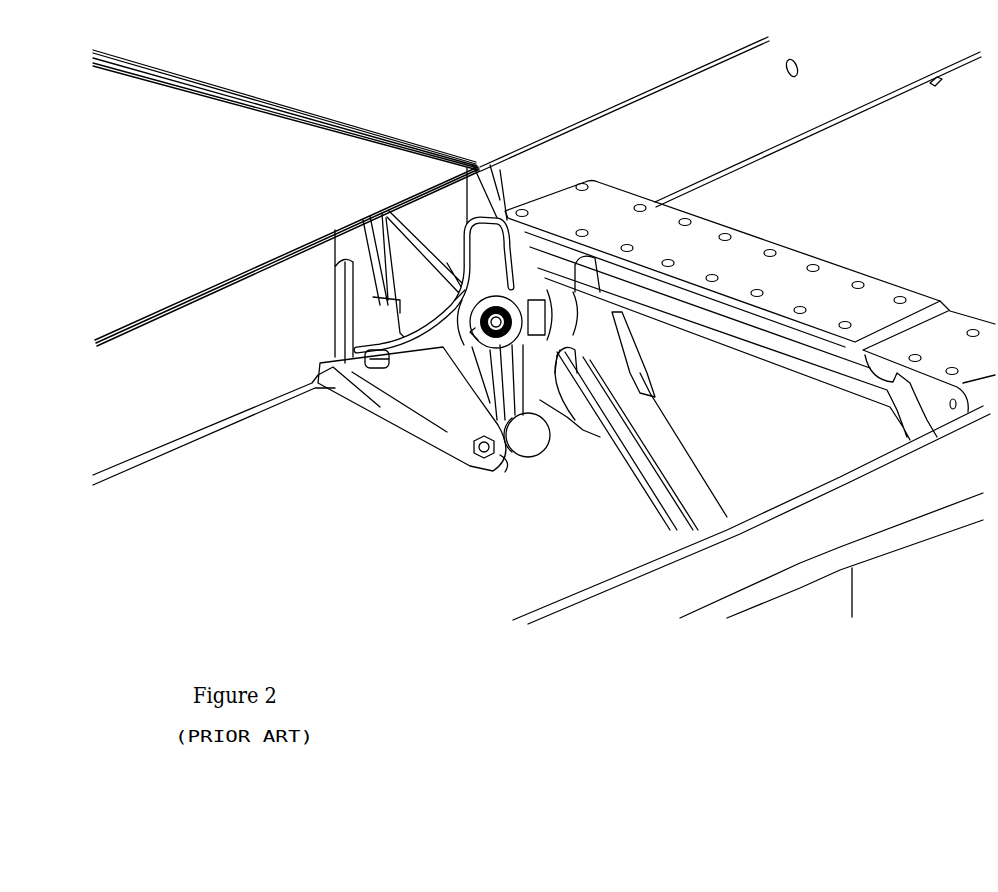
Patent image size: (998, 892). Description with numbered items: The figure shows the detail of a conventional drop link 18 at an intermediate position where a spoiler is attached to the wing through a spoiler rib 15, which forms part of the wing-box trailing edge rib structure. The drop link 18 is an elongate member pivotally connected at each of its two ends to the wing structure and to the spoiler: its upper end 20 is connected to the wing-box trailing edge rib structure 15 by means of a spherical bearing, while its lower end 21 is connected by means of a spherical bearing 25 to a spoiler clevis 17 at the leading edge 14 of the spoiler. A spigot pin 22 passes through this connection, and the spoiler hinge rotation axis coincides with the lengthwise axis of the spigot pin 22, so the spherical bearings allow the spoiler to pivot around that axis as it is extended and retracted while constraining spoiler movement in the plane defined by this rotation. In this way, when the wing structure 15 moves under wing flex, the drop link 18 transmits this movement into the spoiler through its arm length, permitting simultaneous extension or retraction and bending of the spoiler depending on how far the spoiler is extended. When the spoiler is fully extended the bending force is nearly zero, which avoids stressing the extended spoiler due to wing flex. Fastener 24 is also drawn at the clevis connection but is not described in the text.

The leading edge 14 is at (300, 198).
The spoiler rib 15 is at (600, 205).
The spoiler clevis 17 is at (440, 363).
The drop link 18 is at (540, 380).
The upper end 20 is at (500, 300).
The lower end 21 is at (532, 455).
The spigot pin 22 is at (477, 345).
The bolt 24 is at (480, 455).
The spherical bearing 25 is at (507, 463).